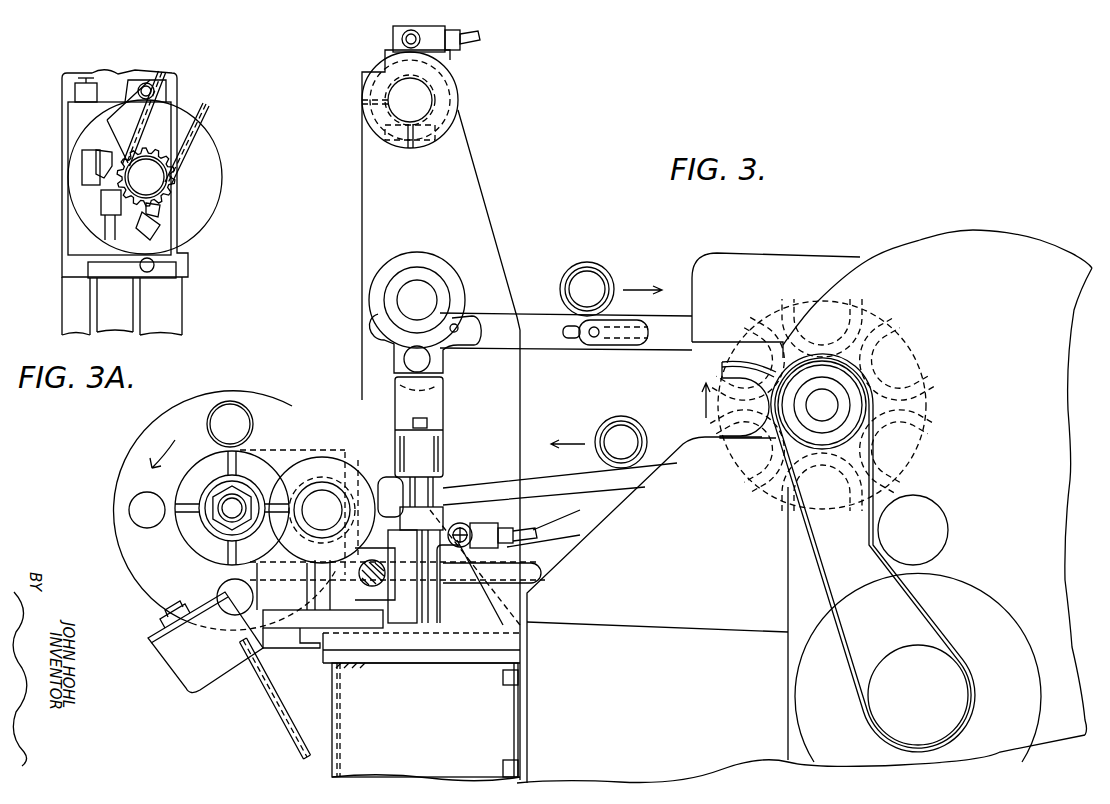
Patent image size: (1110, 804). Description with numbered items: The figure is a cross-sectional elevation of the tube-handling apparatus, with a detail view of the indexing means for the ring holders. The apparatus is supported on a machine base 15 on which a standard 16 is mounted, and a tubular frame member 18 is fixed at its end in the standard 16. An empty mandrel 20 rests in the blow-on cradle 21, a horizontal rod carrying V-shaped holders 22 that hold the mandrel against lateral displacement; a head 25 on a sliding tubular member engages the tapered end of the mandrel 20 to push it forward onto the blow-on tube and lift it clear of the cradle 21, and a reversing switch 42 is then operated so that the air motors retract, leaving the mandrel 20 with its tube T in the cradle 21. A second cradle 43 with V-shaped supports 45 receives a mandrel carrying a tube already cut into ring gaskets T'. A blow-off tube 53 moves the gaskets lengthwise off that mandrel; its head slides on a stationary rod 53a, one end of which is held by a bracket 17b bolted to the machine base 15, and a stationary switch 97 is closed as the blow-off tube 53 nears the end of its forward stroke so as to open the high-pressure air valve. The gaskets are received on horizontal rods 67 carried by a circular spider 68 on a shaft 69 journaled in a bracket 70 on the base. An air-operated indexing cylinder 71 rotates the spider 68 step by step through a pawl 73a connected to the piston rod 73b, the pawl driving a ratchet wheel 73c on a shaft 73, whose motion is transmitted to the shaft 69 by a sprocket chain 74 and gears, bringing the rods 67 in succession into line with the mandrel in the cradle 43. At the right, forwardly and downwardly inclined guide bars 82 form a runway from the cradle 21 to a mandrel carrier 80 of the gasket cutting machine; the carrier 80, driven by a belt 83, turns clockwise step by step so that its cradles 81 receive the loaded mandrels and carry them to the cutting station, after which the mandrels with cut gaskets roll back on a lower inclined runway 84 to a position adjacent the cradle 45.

In FIG. 3, the machine base 15 is at (340, 710).
In FIG. 3, the standard 16 is at (462, 160).
In FIG. 3, the bracket 17b is at (309, 649).
In FIG. 3, the tubular frame member 18 is at (436, 94).
In FIG. 3, the mandrel 20 is at (425, 293).
In FIG. 3, the blow-on cradle 21 is at (432, 360).
In FIG. 3, the V-shaped holders 22 is at (380, 322).
In FIG. 3, the head 25 is at (428, 284).
In FIG. 3, the reversing switch 42 is at (402, 39).
In FIG. 3, the second cradle 43 is at (400, 472).
In FIG. 3, the V-shaped supports 45 is at (318, 462).
In FIG. 3, the blow-off tube 53 is at (323, 478).
In FIG. 3, the stationary rod 53a is at (372, 586).
In FIG. 3, the horizontal rods 67 is at (236, 412).
In FIG. 3, the circular spider 68 is at (140, 449).
In FIG. 3, the shaft 69 is at (222, 512).
In FIG. 3, the bracket 70 is at (352, 462).
In FIG. 3A, the indexing cylinder 71 is at (115, 300).
In FIG. 3A, the shaft 73 is at (160, 179).
In FIG. 3A, the pawl 73a is at (98, 163).
In FIG. 3A, the piston rod 73b is at (106, 212).
In FIG. 3A, the ratchet wheel 73c is at (153, 207).
In FIG. 3A, the sprocket chain 74 is at (207, 118).
In FIG. 3, the sprocket chain 74 is at (284, 732).
In FIG. 3, the mandrel carrier 80 is at (905, 343).
In FIG. 3, the cradles 81 is at (760, 402).
In FIG. 3, the guide bars 82 is at (541, 316).
In FIG. 3, the belt 83 is at (818, 551).
In FIG. 3, the lower inclined runway 84 is at (663, 466).
In FIG. 3, the switch 97 is at (462, 528).